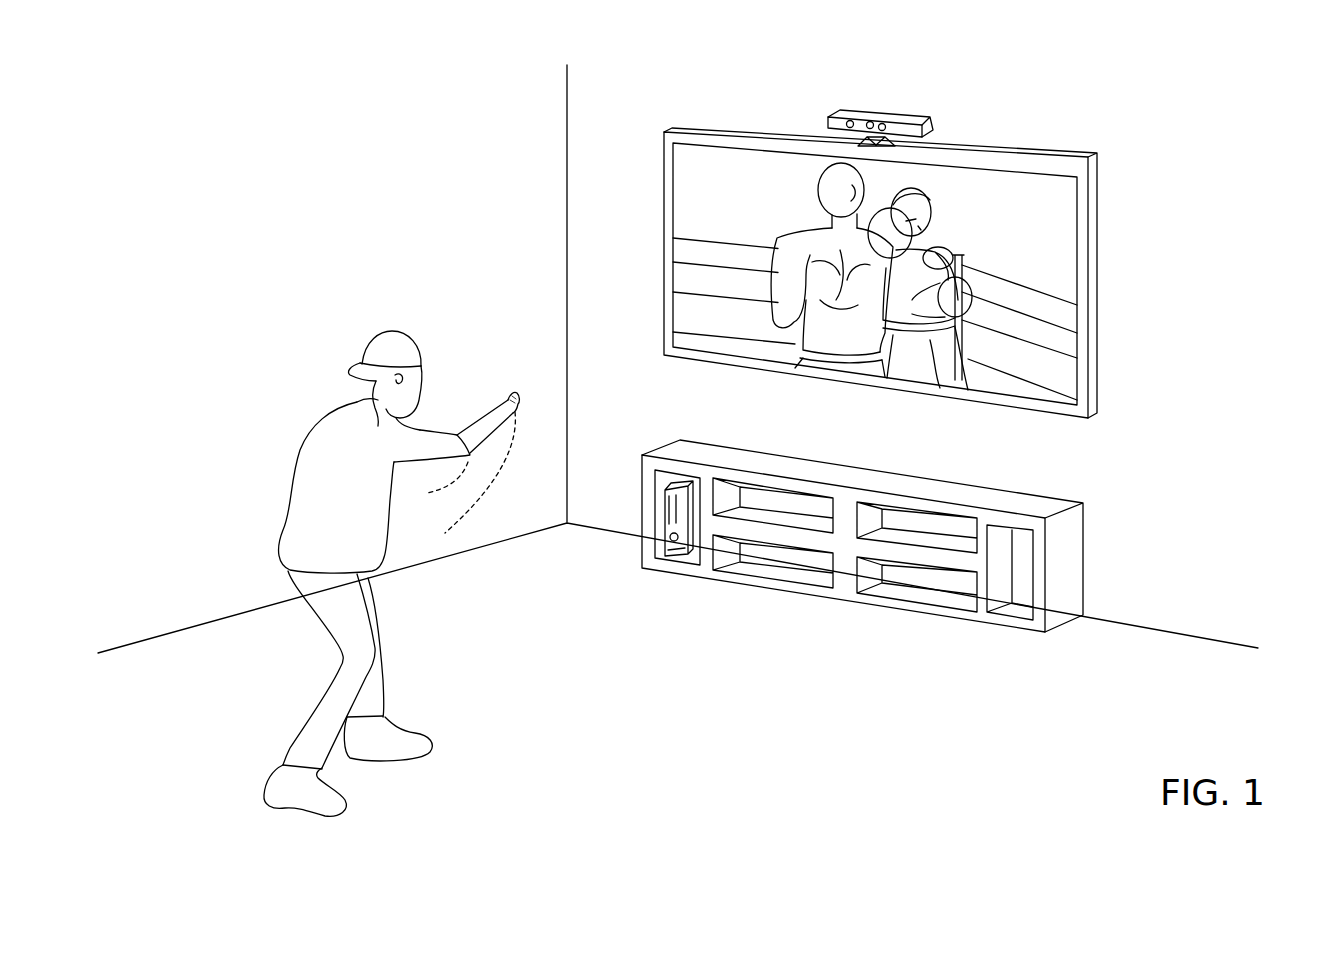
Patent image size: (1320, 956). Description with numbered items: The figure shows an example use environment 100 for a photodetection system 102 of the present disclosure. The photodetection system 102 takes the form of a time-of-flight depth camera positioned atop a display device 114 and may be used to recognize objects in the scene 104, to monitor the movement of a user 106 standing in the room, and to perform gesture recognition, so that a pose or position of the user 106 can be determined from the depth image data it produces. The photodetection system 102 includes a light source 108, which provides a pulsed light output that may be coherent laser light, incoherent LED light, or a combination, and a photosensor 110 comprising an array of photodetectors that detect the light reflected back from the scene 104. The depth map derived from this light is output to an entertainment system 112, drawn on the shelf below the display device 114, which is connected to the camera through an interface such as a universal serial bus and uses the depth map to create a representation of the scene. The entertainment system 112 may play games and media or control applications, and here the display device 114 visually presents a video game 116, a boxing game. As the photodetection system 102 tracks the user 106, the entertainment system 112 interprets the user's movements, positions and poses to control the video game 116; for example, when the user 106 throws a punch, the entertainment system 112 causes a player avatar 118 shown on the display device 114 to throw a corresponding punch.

The use environment 100 is at (1203, 95).
The photodetection system 102 is at (922, 119).
The scene 104 is at (338, 142).
The user 106 is at (360, 513).
The light source 108 is at (850, 121).
The photosensor 110 is at (870, 121).
The entertainment system 112 is at (673, 562).
The display device 114 is at (1097, 190).
The video game 116 is at (727, 185).
The player avatar 118 is at (786, 240).